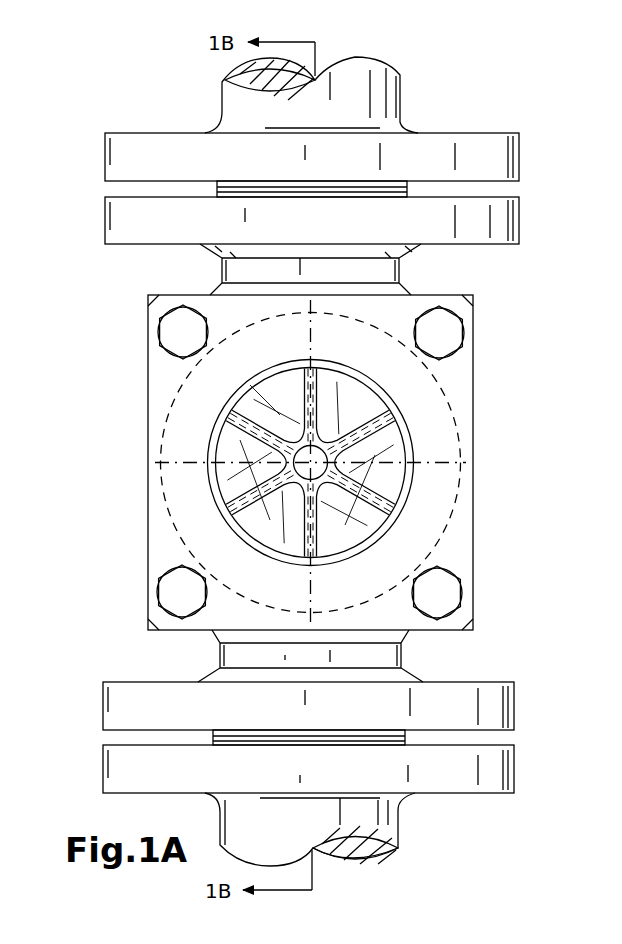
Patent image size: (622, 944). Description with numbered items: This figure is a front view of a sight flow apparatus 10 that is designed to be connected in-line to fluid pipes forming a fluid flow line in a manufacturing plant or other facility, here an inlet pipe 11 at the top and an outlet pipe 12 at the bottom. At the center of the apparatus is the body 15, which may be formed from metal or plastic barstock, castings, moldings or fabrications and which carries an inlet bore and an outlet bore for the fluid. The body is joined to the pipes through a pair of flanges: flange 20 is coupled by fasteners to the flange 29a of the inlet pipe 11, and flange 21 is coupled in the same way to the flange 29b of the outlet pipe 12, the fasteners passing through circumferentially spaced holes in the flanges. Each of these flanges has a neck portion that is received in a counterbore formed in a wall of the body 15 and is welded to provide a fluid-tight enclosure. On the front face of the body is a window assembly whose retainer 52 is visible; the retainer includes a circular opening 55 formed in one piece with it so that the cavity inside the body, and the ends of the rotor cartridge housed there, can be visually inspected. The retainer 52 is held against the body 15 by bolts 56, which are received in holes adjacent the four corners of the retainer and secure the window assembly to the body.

The sight flow apparatus 10 is at (491, 126).
The inlet pipe 11 is at (408, 128).
The outlet pipe 12 is at (402, 798).
The body 15 is at (478, 332).
The flange 20 is at (520, 218).
The flange 21 is at (516, 700).
The flange of inlet pipe 29a is at (516, 158).
The flange of outlet pipe 29b is at (455, 775).
The retainer 52 is at (150, 530).
The circular opening 55 is at (400, 488).
The bolts 56 is at (182, 342).